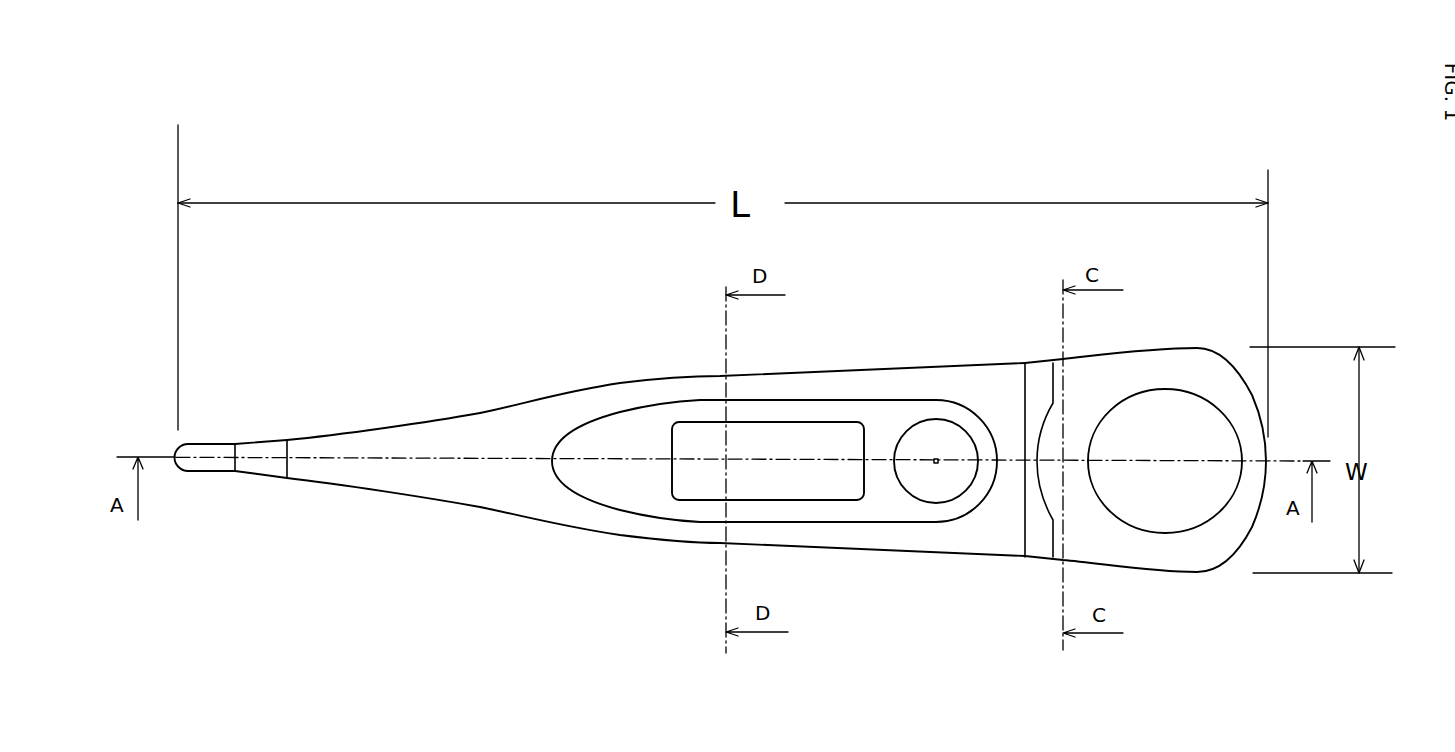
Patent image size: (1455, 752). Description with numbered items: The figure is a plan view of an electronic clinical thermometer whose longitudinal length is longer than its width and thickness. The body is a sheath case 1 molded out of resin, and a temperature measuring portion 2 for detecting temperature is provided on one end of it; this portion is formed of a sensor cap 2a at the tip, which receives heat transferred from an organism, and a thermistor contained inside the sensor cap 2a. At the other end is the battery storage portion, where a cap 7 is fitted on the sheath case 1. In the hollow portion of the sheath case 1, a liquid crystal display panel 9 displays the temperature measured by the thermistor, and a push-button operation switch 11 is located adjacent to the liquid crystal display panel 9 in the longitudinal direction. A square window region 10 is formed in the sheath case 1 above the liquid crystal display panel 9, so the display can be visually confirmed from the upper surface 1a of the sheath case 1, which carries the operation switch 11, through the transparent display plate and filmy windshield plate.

The sheath case 1 is at (465, 512).
The upper surface of the sheath case 1a is at (937, 535).
The temperature measuring portion 2 is at (197, 471).
The sensor cap 2a is at (210, 443).
The cap 7 is at (1237, 393).
The liquid crystal display panel 9 is at (768, 456).
The display window region 10 is at (612, 437).
The operation switch 11 is at (938, 432).